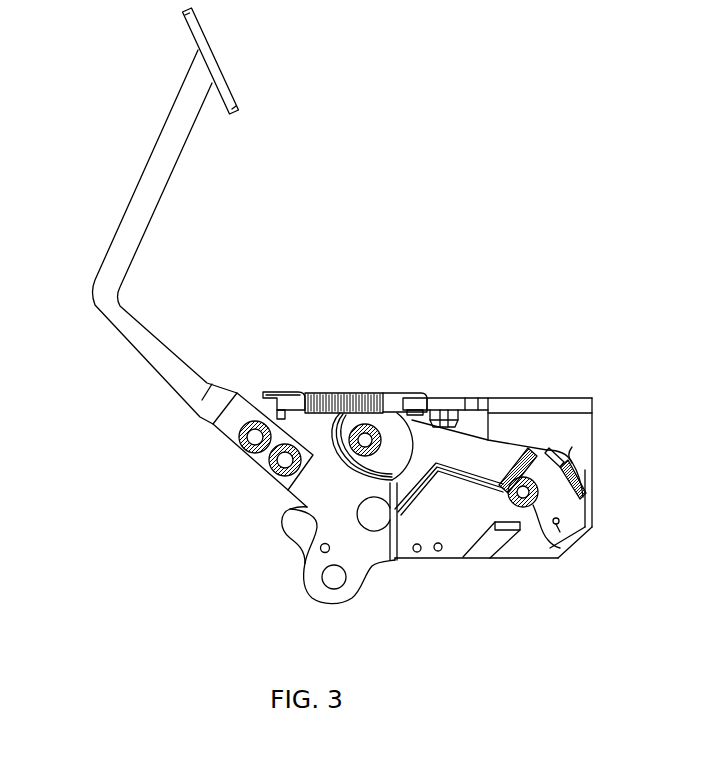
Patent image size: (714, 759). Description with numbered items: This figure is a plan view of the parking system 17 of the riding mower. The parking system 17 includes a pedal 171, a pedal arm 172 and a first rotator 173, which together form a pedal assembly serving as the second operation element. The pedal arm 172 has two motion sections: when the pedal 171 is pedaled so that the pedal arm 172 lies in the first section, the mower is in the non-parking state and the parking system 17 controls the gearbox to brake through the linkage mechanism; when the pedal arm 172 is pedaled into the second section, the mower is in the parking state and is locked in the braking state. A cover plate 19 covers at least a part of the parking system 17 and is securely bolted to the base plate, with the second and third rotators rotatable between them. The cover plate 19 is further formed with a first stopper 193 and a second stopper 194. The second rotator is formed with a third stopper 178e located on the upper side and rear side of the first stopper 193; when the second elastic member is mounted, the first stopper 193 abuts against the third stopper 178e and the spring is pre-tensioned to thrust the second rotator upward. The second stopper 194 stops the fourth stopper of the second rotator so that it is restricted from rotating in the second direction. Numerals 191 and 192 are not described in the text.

The parking system 17 is at (398, 358).
The pedal 171 is at (212, 50).
The pedal arm 172 is at (112, 240).
The first rotator 173 is at (297, 503).
The cover plate 19 is at (452, 547).
The spring 191 is at (362, 392).
The lever 192 is at (530, 522).
The first stopper 193 is at (545, 448).
The second stopper 194 is at (512, 552).
The third stopper 178e is at (572, 447).